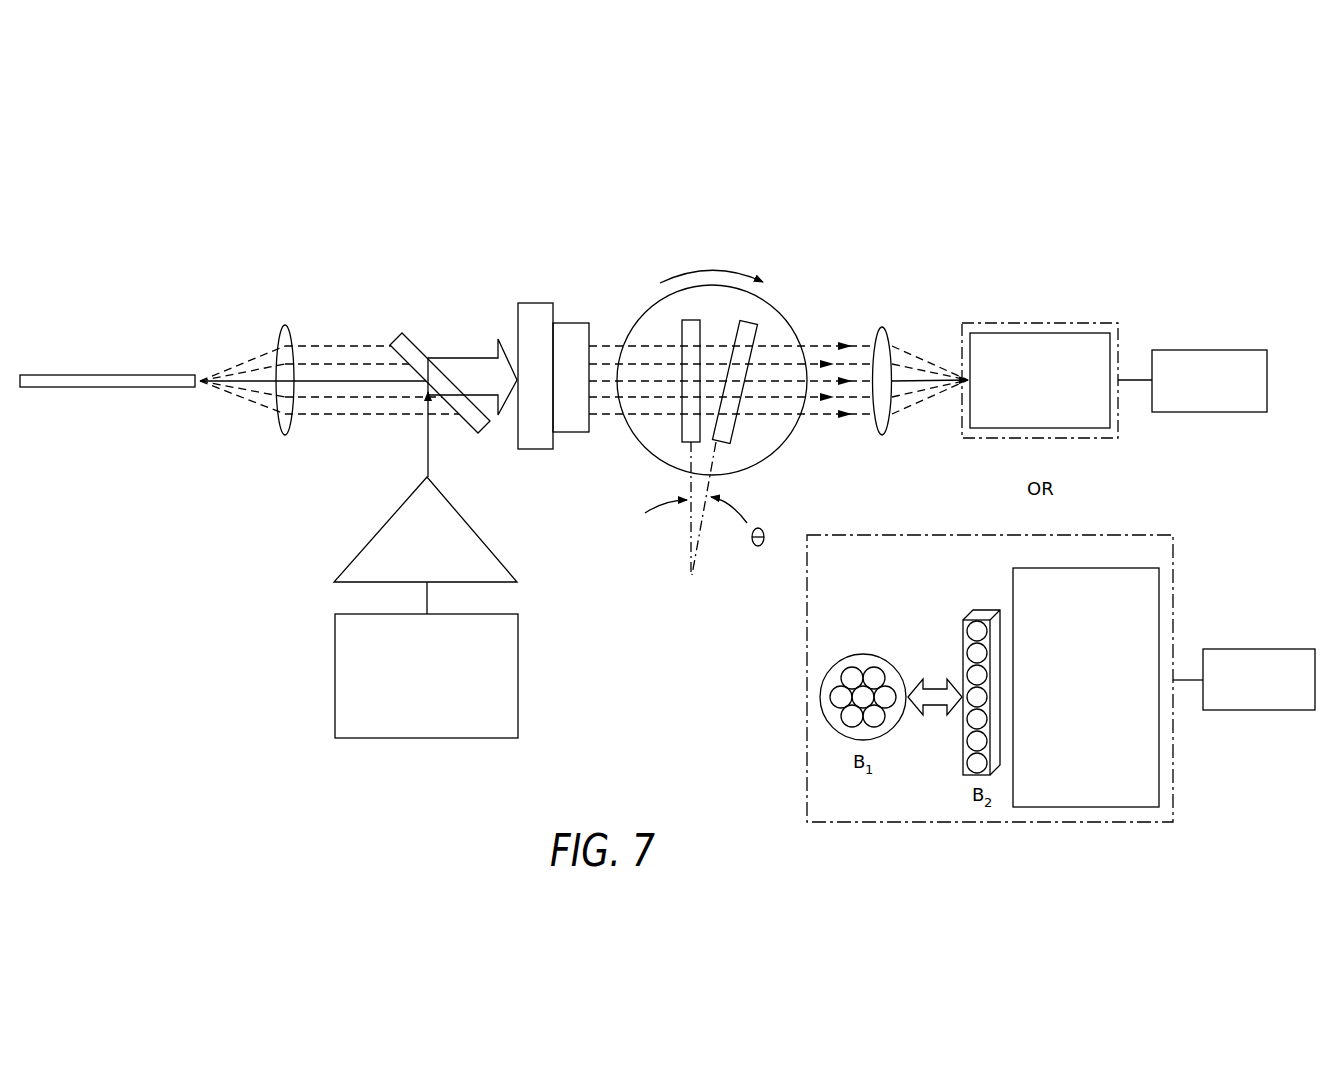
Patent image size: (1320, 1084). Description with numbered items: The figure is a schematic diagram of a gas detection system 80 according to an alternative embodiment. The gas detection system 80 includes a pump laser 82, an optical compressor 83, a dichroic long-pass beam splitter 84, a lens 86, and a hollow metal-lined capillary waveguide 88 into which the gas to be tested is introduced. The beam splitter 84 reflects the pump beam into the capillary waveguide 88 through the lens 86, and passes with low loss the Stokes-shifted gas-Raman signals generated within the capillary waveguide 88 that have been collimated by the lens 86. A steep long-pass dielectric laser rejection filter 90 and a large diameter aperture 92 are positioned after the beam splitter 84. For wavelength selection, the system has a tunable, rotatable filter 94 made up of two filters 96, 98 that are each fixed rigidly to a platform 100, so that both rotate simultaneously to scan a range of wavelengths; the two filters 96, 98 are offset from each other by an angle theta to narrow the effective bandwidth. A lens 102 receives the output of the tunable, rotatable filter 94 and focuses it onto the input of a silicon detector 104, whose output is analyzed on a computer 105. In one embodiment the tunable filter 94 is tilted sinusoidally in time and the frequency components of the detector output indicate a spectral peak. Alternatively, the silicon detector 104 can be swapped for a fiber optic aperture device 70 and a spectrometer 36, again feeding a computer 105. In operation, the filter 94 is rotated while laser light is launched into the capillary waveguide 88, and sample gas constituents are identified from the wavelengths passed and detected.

The gas detection system 80 is at (305, 275).
The pump laser 82 is at (518, 663).
The optical compressor 83 is at (376, 531).
The dichroic long-pass beam splitter 84 is at (398, 338).
The lens 86 is at (283, 326).
The hollow metal-lined capillary waveguide 88 is at (175, 375).
The steep long-pass dielectric laser rejection filter 90 is at (527, 303).
The large diameter aperture 92 is at (568, 432).
The tunable, rotatable filter 94 is at (787, 311).
The filter 96 is at (682, 424).
The filter 98 is at (733, 429).
The platform 100 is at (640, 317).
The lens 102 is at (876, 330).
The silicon detector 104 is at (1003, 333).
The computer 105 is at (1207, 350).
The spectrometer 36 is at (1013, 582).
The fiber optic aperture device 70 is at (932, 711).